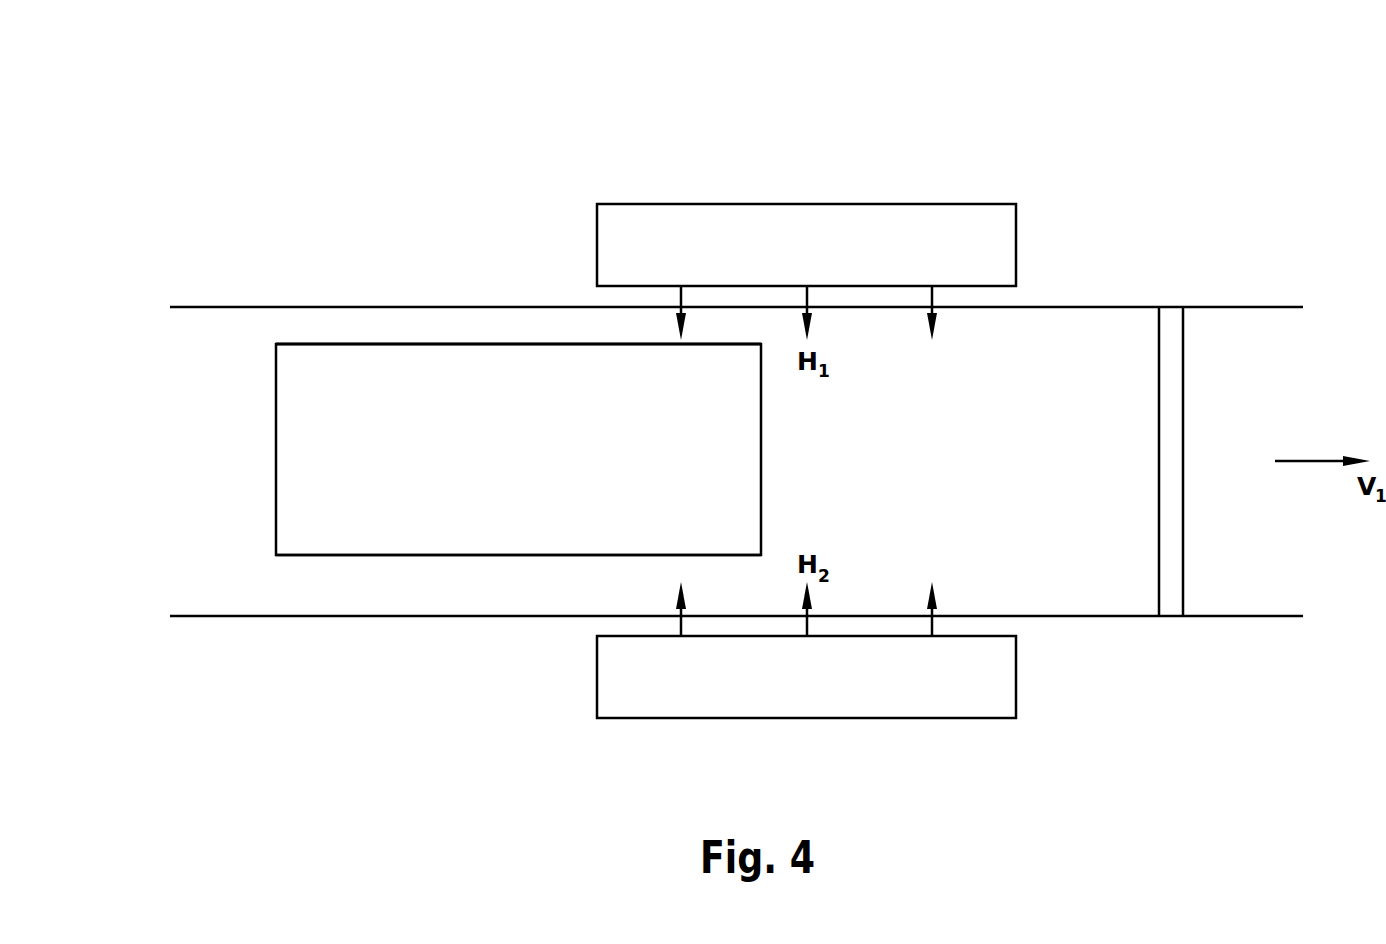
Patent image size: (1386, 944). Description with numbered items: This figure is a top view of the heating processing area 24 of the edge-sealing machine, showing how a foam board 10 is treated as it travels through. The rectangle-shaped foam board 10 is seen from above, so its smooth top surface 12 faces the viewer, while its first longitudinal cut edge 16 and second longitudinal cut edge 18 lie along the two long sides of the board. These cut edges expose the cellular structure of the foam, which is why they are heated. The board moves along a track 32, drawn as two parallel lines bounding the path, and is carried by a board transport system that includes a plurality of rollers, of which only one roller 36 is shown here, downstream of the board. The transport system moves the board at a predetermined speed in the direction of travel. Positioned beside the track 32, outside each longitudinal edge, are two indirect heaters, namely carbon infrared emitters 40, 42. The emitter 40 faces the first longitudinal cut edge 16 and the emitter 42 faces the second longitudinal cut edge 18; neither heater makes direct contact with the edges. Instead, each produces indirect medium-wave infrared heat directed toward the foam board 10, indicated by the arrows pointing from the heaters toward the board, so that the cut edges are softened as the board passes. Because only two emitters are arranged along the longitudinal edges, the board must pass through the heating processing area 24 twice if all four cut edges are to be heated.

The foam board 10 is at (276, 437).
The top surface 12 is at (382, 365).
The first longitudinal cut edge 16 is at (497, 344).
The second longitudinal cut edge 18 is at (465, 555).
The heating processing area 24 is at (520, 92).
The track 32 is at (260, 307).
The roller 36 is at (1159, 355).
The carbon infrared emitter 40 is at (655, 204).
The carbon infrared emitter 42 is at (715, 718).